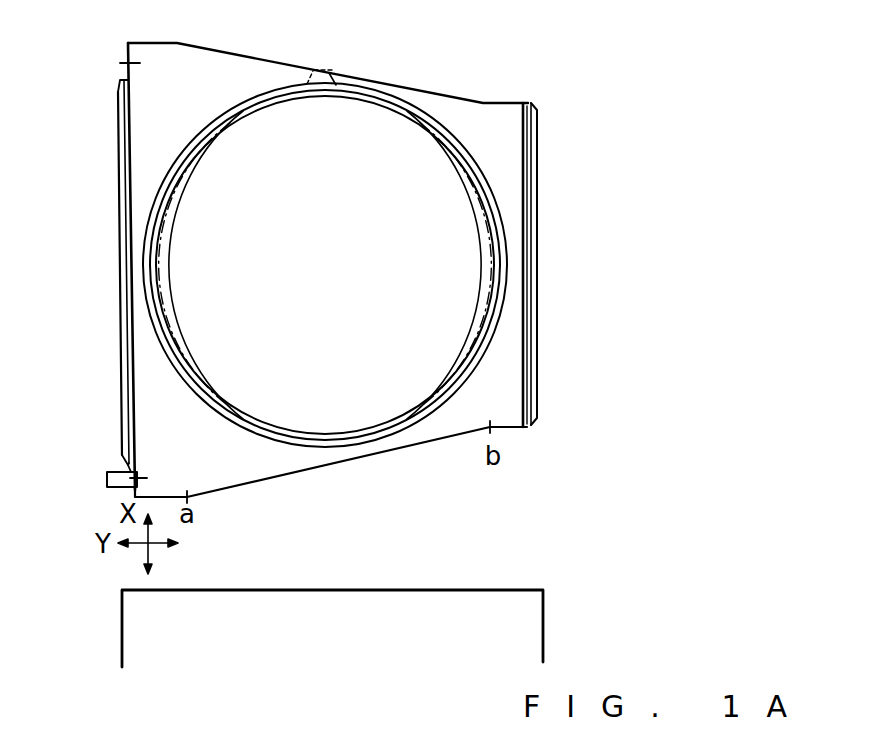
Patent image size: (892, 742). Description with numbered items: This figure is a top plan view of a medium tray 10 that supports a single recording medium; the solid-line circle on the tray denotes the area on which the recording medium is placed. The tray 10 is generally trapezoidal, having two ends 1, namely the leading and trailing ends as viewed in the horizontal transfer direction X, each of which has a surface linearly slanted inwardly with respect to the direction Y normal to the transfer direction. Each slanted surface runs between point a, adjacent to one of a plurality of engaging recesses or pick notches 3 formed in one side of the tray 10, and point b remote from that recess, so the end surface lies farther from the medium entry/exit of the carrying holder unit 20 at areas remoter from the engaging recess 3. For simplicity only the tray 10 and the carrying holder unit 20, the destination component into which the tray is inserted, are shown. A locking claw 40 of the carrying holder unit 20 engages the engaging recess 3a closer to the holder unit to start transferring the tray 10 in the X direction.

The end 1 is at (383, 83).
The engaging recess 3 is at (127, 58).
The engaging recess 3a is at (130, 468).
The medium tray 10 is at (545, 102).
The carrying holder unit 20 is at (557, 624).
The locking claw 40 is at (105, 478).